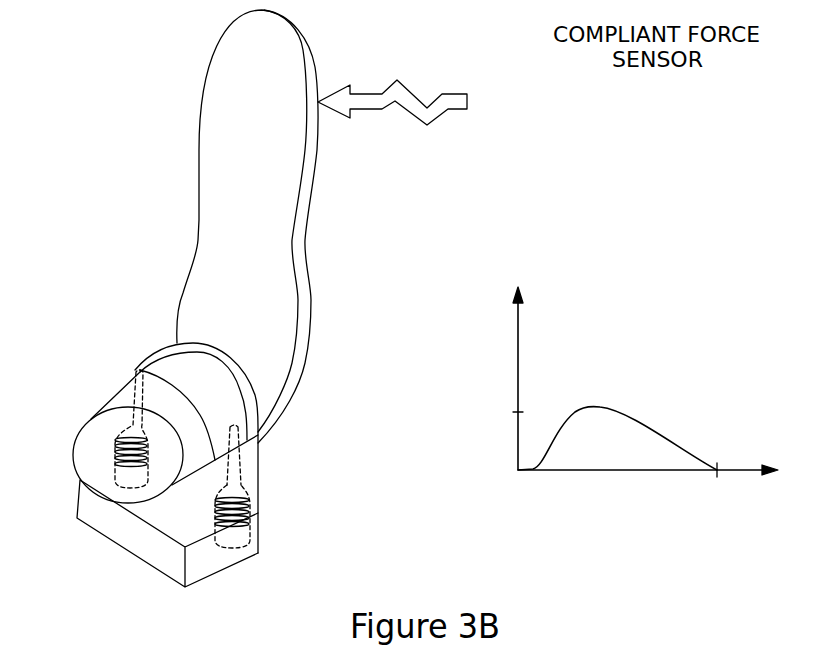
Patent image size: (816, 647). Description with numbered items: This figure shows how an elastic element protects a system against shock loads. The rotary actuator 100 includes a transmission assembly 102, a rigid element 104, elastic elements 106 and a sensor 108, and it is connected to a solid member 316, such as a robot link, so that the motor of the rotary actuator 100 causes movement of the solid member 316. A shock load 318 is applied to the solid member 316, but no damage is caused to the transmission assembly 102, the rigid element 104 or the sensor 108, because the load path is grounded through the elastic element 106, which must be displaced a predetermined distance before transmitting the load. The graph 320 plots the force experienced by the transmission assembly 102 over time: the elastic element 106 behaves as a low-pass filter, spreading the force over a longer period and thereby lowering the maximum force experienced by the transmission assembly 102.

The rotary actuator 100 is at (90, 450).
The transmission assembly 102 is at (150, 368).
The rigid element 104 is at (247, 450).
The elastic element 106 is at (250, 520).
The sensor 108 is at (240, 475).
The solid member 316 is at (307, 218).
The shock load 318 is at (411, 102).
The graph 320 is at (738, 322).